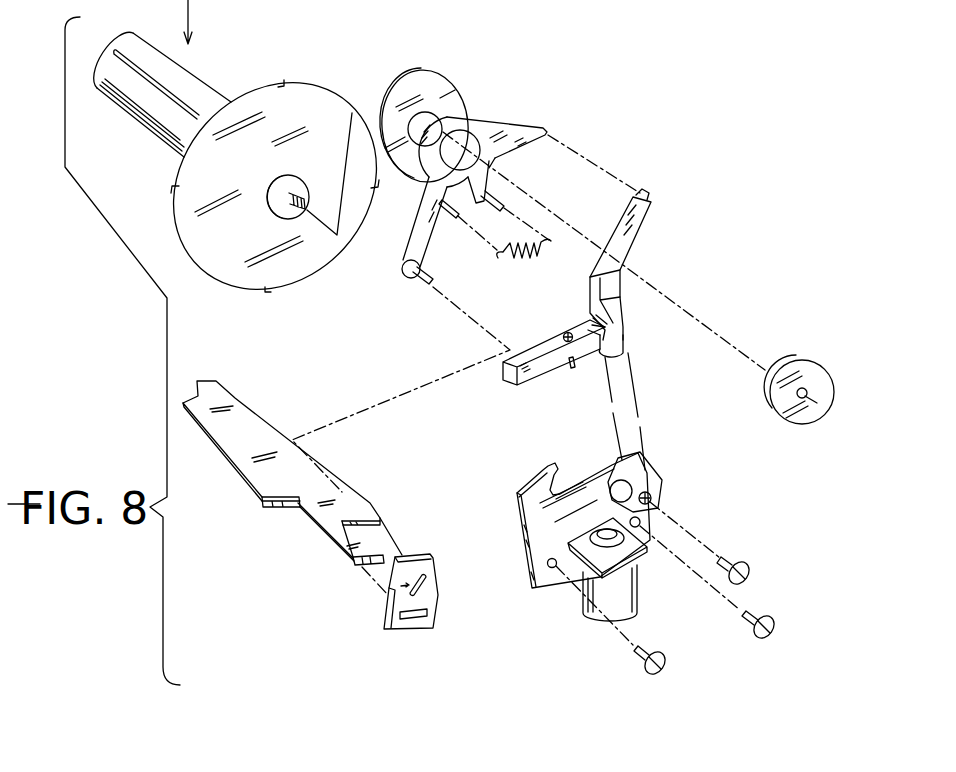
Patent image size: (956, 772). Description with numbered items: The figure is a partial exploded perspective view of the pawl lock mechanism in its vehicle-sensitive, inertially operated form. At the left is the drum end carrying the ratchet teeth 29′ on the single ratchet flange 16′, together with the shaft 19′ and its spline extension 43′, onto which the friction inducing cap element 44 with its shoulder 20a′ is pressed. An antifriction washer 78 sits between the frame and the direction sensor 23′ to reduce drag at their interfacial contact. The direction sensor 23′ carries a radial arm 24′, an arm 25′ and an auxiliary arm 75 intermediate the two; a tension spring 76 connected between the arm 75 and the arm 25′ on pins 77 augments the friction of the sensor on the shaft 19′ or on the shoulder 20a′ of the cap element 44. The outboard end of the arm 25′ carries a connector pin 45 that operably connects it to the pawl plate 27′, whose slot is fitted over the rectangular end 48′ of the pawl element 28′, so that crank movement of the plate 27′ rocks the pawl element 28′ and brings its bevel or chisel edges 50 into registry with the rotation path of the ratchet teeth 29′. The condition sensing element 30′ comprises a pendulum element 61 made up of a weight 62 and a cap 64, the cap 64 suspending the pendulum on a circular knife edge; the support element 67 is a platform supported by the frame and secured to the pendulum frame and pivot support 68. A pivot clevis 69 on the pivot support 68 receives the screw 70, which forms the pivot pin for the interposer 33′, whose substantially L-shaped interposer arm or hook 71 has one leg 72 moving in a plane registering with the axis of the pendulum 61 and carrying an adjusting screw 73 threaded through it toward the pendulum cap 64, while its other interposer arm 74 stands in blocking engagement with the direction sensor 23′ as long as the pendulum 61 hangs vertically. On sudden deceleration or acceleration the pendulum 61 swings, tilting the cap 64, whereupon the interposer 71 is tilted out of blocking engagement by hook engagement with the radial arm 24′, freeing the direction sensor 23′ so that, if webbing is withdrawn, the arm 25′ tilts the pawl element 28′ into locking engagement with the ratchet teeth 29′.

The ratchet teeth 29′ is at (270, 93).
The ratchet flange 16′ is at (323, 110).
The shaft 19′ is at (290, 208).
The spline extension 43′ is at (306, 200).
The antifriction washer 78 is at (440, 87).
The radial arm 24′ is at (522, 130).
The direction sensor 23′ is at (595, 136).
The arm 25′ is at (422, 232).
The connector pin 45 is at (412, 283).
The auxiliary arm 75 is at (505, 186).
The pins 77 is at (456, 218).
The tension spring 76 is at (513, 258).
The interposer arm 74 is at (648, 203).
The interposer 33′ is at (660, 232).
The interposer arm or hook 71 is at (620, 252).
The adjusting screw 73 is at (570, 333).
The leg 72 is at (542, 370).
The shoulder 20a′ is at (780, 360).
The friction inducing cap element 44 is at (820, 393).
The condition sensing element 30′ is at (777, 494).
The bevel or chisel edges 50 is at (372, 508).
The pawl element 28′ is at (278, 490).
The rectangular end 48′ is at (355, 567).
The pawl plate 27′ is at (437, 605).
The pendulum frame and pivot support 68 is at (537, 547).
The support element 67 is at (586, 564).
The cap 64 is at (630, 540).
The weight 62 is at (600, 613).
The pivot clevis 69 is at (657, 492).
The screw 70 is at (750, 572).
The pendulum element 61 is at (668, 617).